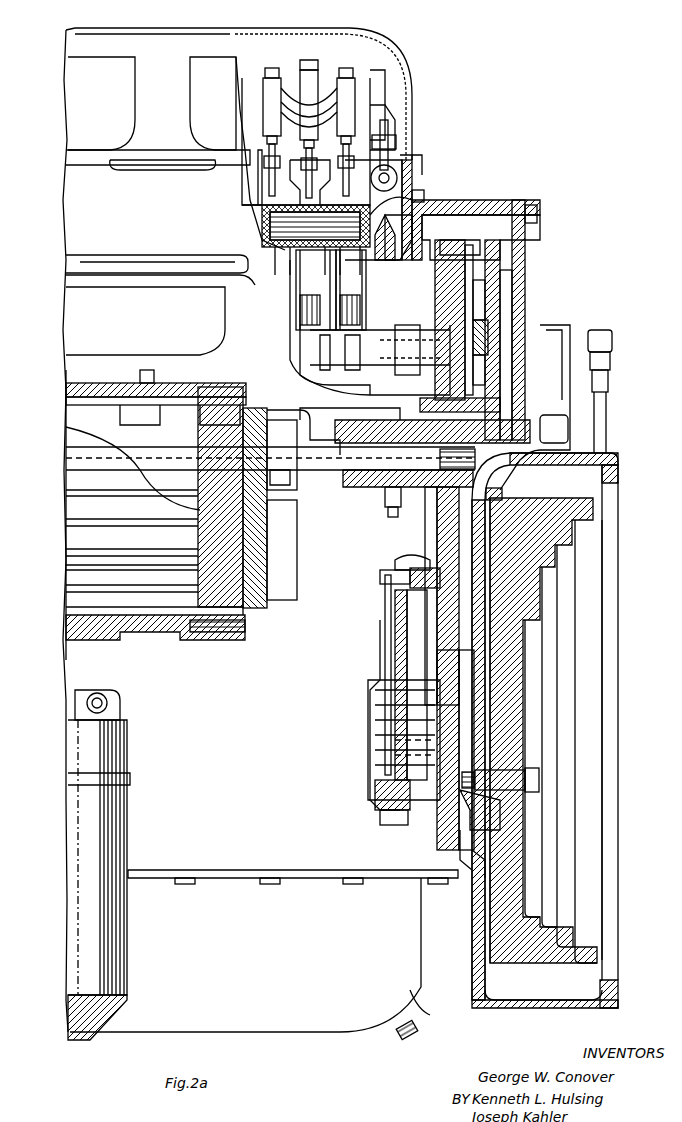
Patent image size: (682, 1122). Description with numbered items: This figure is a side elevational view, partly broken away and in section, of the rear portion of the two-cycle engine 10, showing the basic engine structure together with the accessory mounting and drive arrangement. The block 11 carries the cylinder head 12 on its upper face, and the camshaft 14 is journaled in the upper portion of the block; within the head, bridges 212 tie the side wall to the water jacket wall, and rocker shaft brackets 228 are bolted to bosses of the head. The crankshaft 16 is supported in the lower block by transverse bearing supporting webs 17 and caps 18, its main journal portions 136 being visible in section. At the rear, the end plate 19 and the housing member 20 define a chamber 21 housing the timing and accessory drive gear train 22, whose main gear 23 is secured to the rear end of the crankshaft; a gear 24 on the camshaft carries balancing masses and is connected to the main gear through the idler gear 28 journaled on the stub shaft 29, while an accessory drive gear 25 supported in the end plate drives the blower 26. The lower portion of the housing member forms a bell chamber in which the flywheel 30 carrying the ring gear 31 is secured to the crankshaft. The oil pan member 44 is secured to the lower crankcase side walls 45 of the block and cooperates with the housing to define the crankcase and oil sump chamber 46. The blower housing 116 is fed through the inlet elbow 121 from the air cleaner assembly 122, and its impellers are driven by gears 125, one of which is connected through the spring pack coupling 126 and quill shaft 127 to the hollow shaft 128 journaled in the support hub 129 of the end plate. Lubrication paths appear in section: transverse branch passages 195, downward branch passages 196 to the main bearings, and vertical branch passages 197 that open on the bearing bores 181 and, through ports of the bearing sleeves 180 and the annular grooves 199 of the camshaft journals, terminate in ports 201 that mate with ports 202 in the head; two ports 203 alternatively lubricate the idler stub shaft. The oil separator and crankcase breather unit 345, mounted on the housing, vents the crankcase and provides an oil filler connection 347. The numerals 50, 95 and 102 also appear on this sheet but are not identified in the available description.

The engine 10 is at (78, 292).
The block 11 is at (68, 662).
The cylinder head 12 is at (428, 170).
The camshaft 14 is at (410, 112).
The crankshaft 16 is at (360, 705).
The bearing supporting webs or arches 17 is at (395, 600).
The caps 18 is at (385, 800).
The end plate 19 is at (422, 240).
The housing member 20 is at (538, 458).
The chamber 21 is at (528, 292).
The engine timing and accessory drive gear train 22 is at (485, 390).
The main gear 23 is at (445, 695).
The gears 24 is at (478, 305).
The accessory drive gears 25 is at (478, 410).
The engine charging blower 26 is at (70, 383).
The idler gear 28 is at (438, 540).
The stub shaft 29 is at (398, 562).
The flywheel 30 is at (590, 592).
The ring gear 31 is at (505, 494).
The oil pan member 44 is at (445, 1012).
The lower crankcase defining side walls 45 is at (258, 872).
The crankcase and oil sump chamber 46 is at (425, 830).
The pipe 50 is at (73, 858).
The pin 95 is at (395, 152).
The injector 102 is at (312, 80).
The blower housing 116 is at (222, 640).
The inlet elbow 121 is at (84, 330).
The air cleaner assembly 122 is at (195, 75).
The gears 125 is at (298, 392).
The spring pack coupling 126 is at (305, 420).
The quill shaft 127 is at (340, 475).
The hollow shaft 128 is at (515, 418).
The support hub 129 is at (385, 495).
The main crankshaft journal portions 136 is at (378, 732).
The bearing sleeves 180 is at (330, 388).
The bearing supporting bores 181 is at (350, 328).
The branch passages 195 is at (385, 578).
The branch passages 196 is at (392, 640).
The branch passages 197 is at (375, 410).
The annular groove 199 is at (488, 335).
The ports 201 is at (345, 308).
The ports 202 is at (335, 287).
The ports 203 is at (390, 582).
The bridges 212 is at (285, 245).
The rocker shaft brackets 228 is at (252, 112).
The oil separator and crankcase breather unit 345 is at (612, 340).
The oil filler connection 347 is at (608, 418).